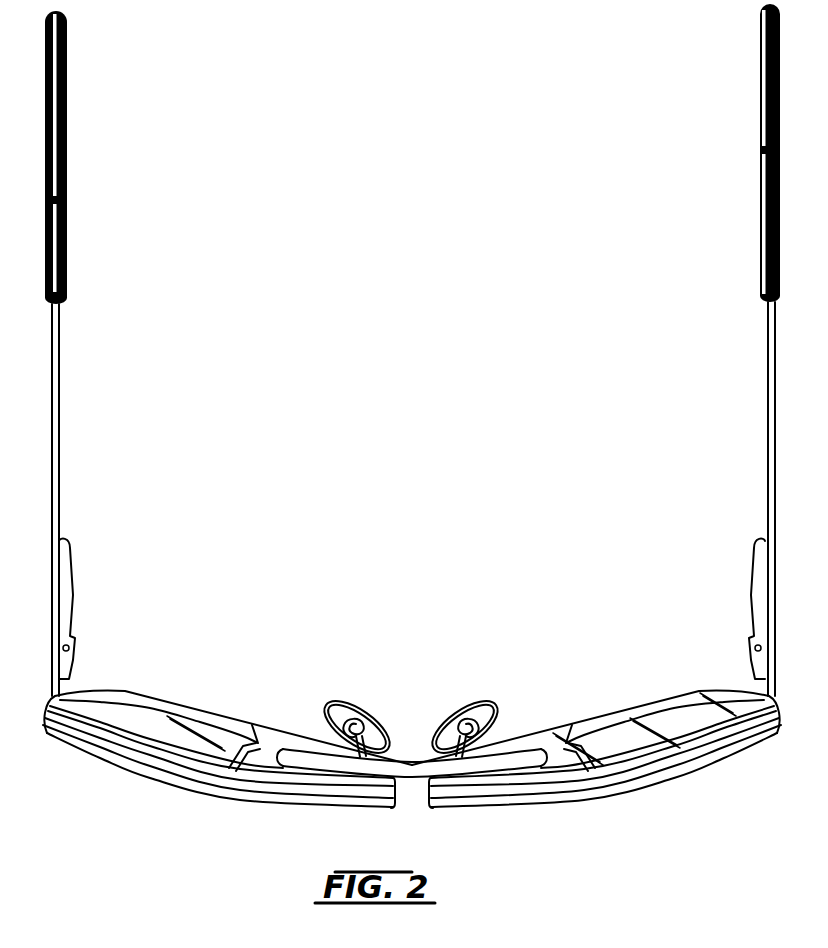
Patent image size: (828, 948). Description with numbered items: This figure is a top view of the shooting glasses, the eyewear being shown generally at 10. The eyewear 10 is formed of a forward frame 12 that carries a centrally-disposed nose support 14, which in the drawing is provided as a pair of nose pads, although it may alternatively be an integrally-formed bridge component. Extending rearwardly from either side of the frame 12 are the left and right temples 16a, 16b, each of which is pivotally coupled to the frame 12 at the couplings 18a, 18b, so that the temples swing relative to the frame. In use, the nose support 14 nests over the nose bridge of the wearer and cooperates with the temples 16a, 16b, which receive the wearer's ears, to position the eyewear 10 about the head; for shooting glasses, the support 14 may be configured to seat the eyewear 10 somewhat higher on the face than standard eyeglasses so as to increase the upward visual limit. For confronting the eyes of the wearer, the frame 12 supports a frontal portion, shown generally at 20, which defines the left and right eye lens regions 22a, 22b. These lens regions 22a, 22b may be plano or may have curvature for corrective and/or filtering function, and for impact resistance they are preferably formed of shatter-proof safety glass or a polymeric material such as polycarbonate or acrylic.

The eyewear 10 is at (412, 442).
The forward frame 12 is at (700, 737).
The nose support 14 is at (440, 720).
The left temple 16a is at (768, 436).
The right temple 16b is at (60, 371).
The pivotal coupling 18a is at (753, 645).
The pivotal coupling 18b is at (73, 648).
The frontal portion 20 is at (264, 824).
The left eye lens region 22a is at (590, 735).
The right eye lens region 22b is at (200, 722).